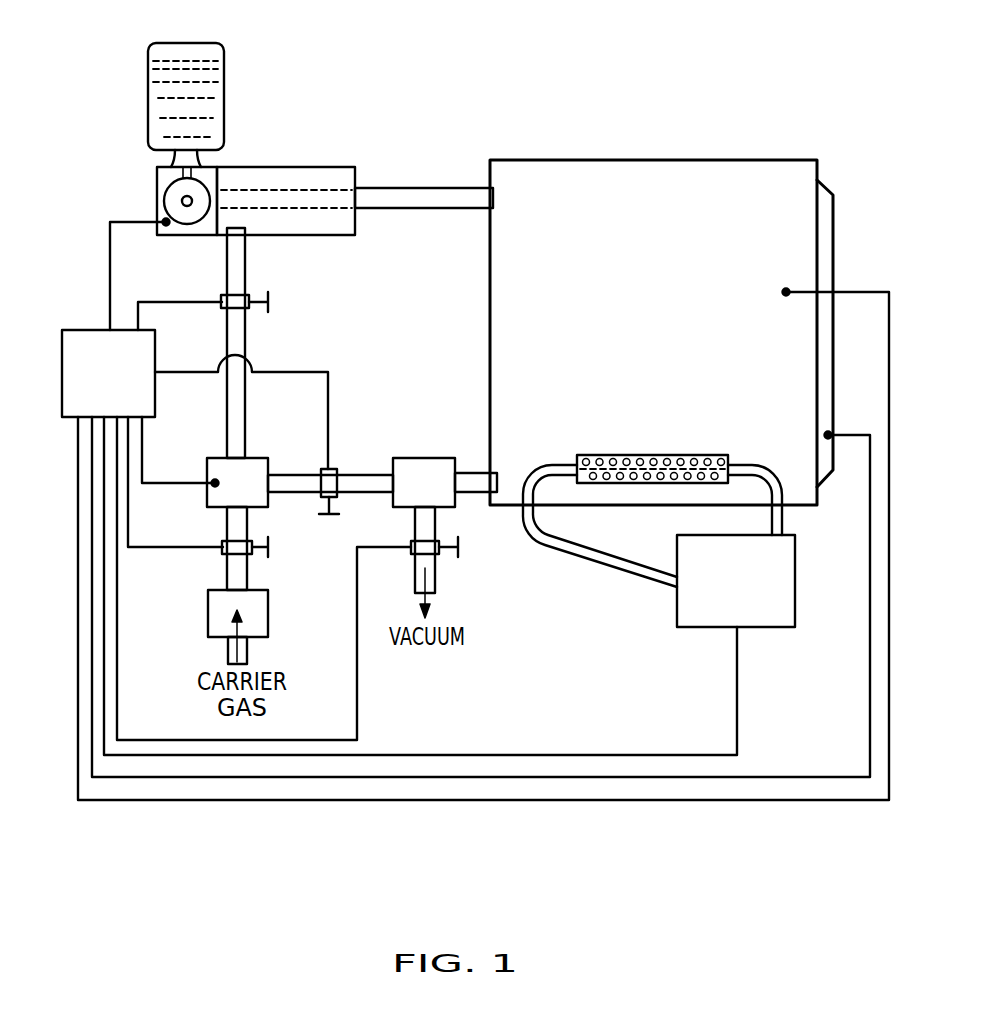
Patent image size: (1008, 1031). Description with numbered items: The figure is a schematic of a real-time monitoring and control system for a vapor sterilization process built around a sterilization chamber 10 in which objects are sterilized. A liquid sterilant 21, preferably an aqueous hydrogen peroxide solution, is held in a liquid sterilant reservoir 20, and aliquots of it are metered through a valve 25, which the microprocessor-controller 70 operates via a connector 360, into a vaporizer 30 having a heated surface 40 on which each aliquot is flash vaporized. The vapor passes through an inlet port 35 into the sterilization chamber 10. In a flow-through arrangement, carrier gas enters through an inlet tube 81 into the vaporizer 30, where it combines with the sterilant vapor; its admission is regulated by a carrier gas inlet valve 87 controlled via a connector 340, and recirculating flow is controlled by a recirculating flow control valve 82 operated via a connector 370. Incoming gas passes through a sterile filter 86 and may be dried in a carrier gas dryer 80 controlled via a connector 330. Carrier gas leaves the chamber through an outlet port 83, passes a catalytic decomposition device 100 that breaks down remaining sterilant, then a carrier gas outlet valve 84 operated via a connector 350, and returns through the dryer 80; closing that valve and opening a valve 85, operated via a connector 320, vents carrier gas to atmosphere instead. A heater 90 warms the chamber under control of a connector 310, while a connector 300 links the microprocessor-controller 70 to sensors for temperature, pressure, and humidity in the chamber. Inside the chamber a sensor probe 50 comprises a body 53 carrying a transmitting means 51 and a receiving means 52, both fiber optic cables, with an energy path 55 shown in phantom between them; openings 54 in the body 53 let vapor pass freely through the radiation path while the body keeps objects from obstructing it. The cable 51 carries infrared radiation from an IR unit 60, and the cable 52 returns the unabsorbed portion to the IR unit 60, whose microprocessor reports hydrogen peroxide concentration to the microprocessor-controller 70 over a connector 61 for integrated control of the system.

The sterilization chamber 10 is at (677, 172).
The liquid sterilant reservoir 20 is at (187, 43).
The liquid sterilant 21 is at (183, 72).
The valve 25 is at (173, 197).
The vaporizer 30 is at (287, 167).
The inlet port 35 is at (426, 200).
The heated surface 40 is at (325, 190).
The sensor probe 50 is at (691, 486).
The transmitting means 51 is at (786, 524).
The receiving means 52 is at (621, 578).
The body 53 is at (624, 455).
The openings 54 is at (688, 460).
The energy path 55 is at (660, 470).
The IR unit 60 is at (711, 628).
The connector 61 is at (737, 680).
The microprocessor-controller 70 is at (91, 330).
The carrier gas dryer 80 is at (269, 458).
The inlet tube 81 is at (243, 260).
The recirculating flow control valve 82 is at (232, 310).
The outlet port 83 is at (470, 472).
The carrier gas outlet valve 84 is at (337, 482).
The valve 85 is at (428, 555).
The sterile filter 86 is at (208, 612).
The carrier gas inlet valve 87 is at (232, 558).
The heater 90 is at (829, 242).
The catalytic decomposition device 100 is at (443, 458).
The connector 300 is at (858, 292).
The connector 310 is at (870, 668).
The connector 320 is at (358, 690).
The connector 330 is at (175, 483).
The connector 340 is at (193, 523).
The connector 350 is at (323, 372).
The connector 360 is at (110, 268).
The connector 370 is at (194, 302).